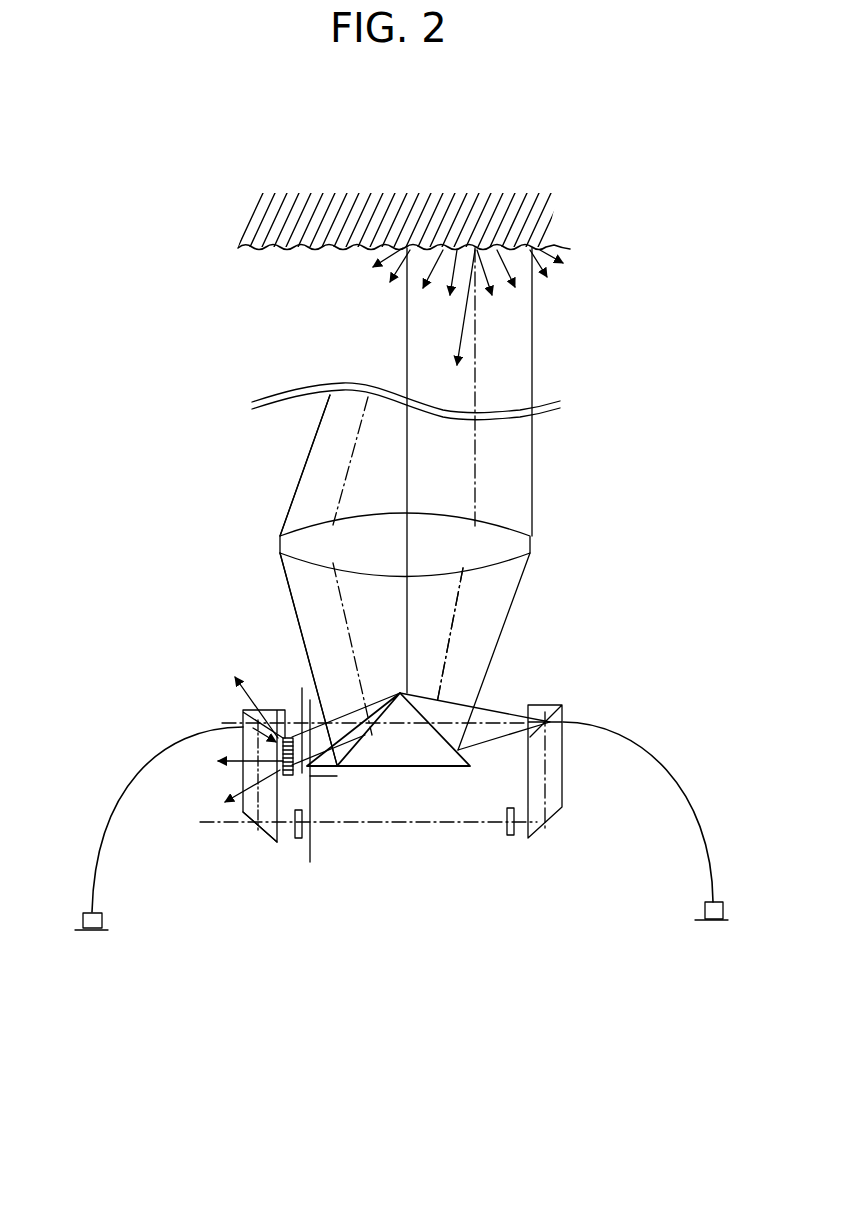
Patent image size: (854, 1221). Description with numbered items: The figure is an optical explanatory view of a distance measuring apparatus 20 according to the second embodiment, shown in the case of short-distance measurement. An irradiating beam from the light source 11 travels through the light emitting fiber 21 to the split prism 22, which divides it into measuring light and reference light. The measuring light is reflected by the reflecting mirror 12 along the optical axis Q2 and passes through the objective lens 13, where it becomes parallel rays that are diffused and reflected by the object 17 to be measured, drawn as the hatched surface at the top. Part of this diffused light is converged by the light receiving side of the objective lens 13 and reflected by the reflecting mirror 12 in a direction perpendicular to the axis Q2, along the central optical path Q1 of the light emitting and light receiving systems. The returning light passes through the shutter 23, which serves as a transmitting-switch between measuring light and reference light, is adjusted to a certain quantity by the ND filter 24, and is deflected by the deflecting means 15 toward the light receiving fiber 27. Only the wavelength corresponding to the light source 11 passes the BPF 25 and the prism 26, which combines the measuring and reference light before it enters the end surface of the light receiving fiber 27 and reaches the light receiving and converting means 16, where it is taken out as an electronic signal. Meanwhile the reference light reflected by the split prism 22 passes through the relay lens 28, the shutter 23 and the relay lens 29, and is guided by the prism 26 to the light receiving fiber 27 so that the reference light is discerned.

The light source 11 is at (723, 912).
The reflecting mirror 12 is at (417, 767).
The objective lens 13 is at (520, 544).
The deflecting means 15 is at (278, 840).
The light receiving and converting means 16 is at (102, 920).
The object to be measured 17 is at (552, 222).
The distance measuring apparatus 20 is at (640, 378).
The light emitting fiber 21 is at (680, 778).
The split prism 22 is at (562, 792).
The shutter 23 is at (312, 840).
The ND filter 24 is at (302, 688).
The BPF (band pass filter) 25 is at (238, 678).
The prism 26 is at (248, 817).
The light receiving fiber 27 is at (137, 778).
The relay lens 28 is at (508, 836).
The relay lens 29 is at (298, 840).
The central optical path Q1 is at (453, 617).
The optical axis Q2 is at (403, 620).